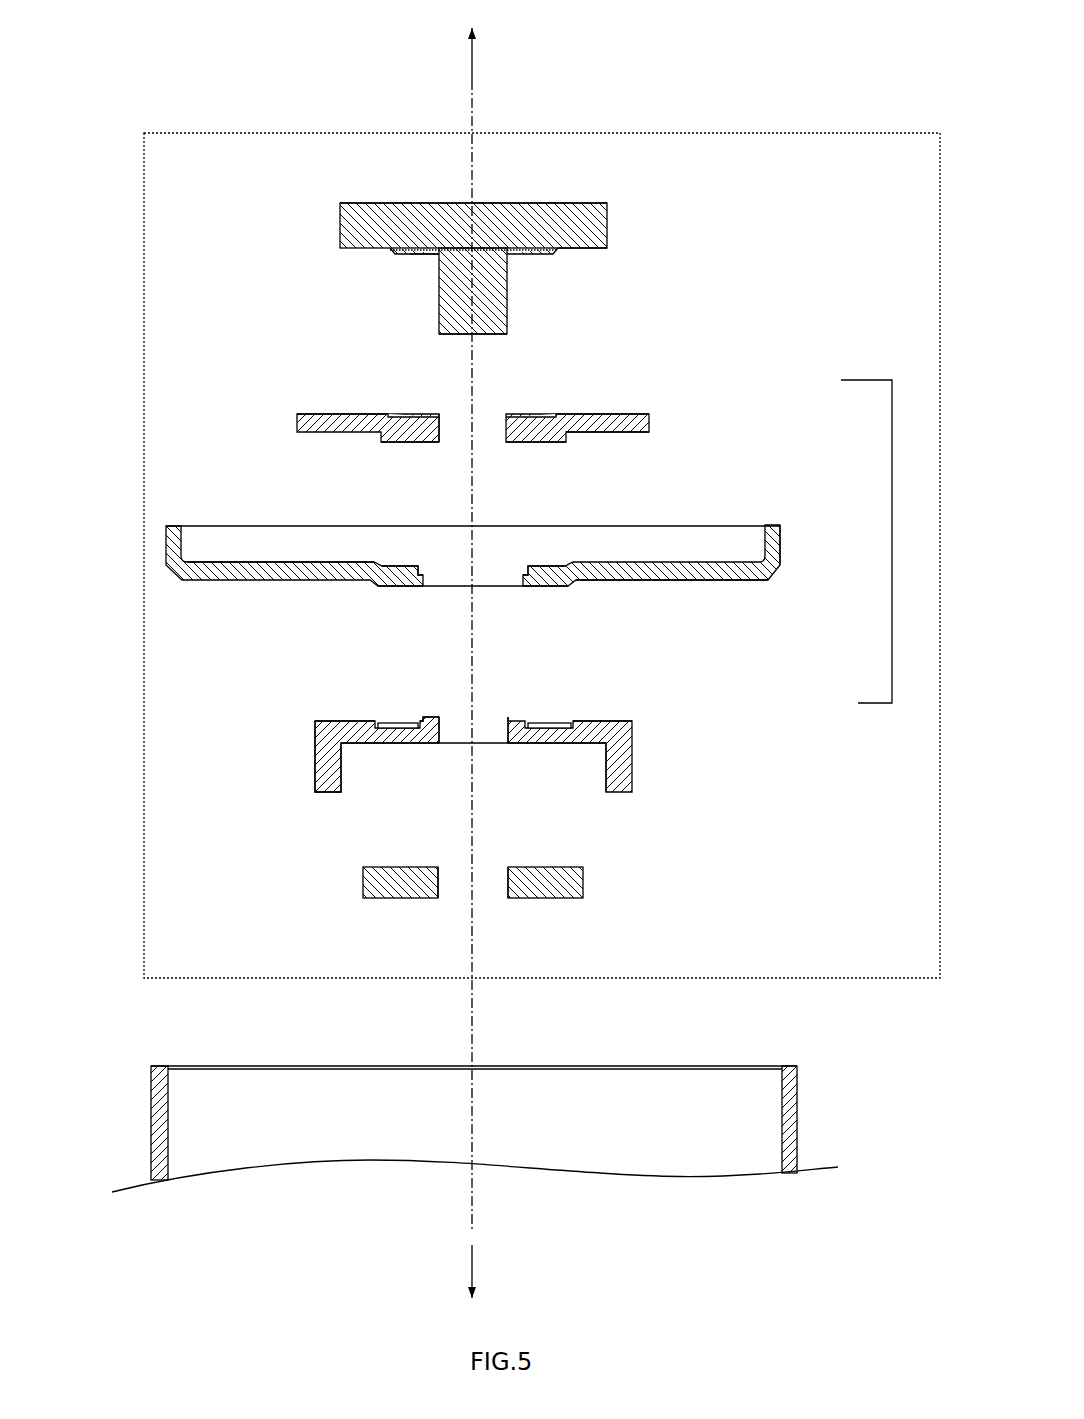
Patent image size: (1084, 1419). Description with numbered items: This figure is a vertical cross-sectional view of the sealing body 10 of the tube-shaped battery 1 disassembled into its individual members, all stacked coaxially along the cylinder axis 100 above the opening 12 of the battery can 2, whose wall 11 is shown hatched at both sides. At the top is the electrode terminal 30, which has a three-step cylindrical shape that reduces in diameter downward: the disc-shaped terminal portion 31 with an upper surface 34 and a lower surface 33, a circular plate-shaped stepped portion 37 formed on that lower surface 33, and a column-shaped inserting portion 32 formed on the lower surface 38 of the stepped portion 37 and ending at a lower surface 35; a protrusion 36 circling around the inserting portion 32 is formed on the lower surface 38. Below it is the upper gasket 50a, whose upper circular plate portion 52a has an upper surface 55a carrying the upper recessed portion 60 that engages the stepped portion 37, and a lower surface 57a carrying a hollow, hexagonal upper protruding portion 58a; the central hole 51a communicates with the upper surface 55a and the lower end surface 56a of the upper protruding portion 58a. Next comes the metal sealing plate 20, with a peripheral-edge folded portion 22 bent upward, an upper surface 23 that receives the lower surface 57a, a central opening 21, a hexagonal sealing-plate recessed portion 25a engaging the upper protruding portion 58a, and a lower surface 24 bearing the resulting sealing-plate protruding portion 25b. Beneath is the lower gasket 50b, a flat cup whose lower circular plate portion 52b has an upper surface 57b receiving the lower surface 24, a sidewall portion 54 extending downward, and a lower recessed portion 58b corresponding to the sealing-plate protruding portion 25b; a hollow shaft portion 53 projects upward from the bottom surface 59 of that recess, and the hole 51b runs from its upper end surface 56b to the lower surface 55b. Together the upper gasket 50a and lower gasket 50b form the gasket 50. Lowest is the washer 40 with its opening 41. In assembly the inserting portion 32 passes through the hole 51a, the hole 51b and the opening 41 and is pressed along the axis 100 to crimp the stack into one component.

The tube-shaped battery 1 is at (745, 98).
The battery can 2 is at (488, 1086).
The sealing body 10 is at (143, 258).
The side wall 11 is at (154, 1064).
The opening 12 is at (600, 1067).
The sealing plate 20 is at (512, 560).
The opening 21 is at (487, 578).
The peripheral-edge folded portion 22 is at (780, 560).
The upper surface 23 is at (248, 559).
The lower surface 24 is at (703, 585).
The sealing-plate recessed portion 25a is at (392, 563).
The sealing-plate protruding portion 25b is at (383, 588).
The electrode terminal 30 is at (491, 268).
The terminal portion 31 is at (340, 240).
The inserting portion 32 is at (508, 303).
The lower surface 33 is at (592, 252).
The upper surface 34 is at (539, 202).
The lower surface 35 is at (443, 338).
The protrusion 36 is at (402, 258).
The stepped portion 37 is at (400, 252).
The lower surface 38 is at (415, 258).
The washer 40 is at (536, 891).
The opening 41 is at (452, 900).
The gasket 50 is at (885, 541).
The upper gasket 50a is at (565, 424).
The lower gasket 50b is at (543, 738).
The hole 51a is at (490, 416).
The hole 51b is at (490, 716).
The upper circular plate portion 52a is at (337, 412).
The lower circular plate portion 52b is at (355, 718).
The shaft portion 53 is at (524, 722).
The sidewall portion 54 is at (318, 768).
The upper surface 55a is at (602, 412).
The lower surface 55b is at (372, 747).
The lower end surface 56a is at (556, 445).
The upper end surface 56b is at (438, 719).
The lower surface 57a is at (620, 436).
The upper surface 57b is at (606, 719).
The upper protruding portion 58a is at (383, 442).
The lower recessed portion 58b is at (380, 719).
The bottom surface 59 is at (406, 719).
The upper recessed portion 60 is at (535, 418).
The cylinder axis 100 is at (470, 88).